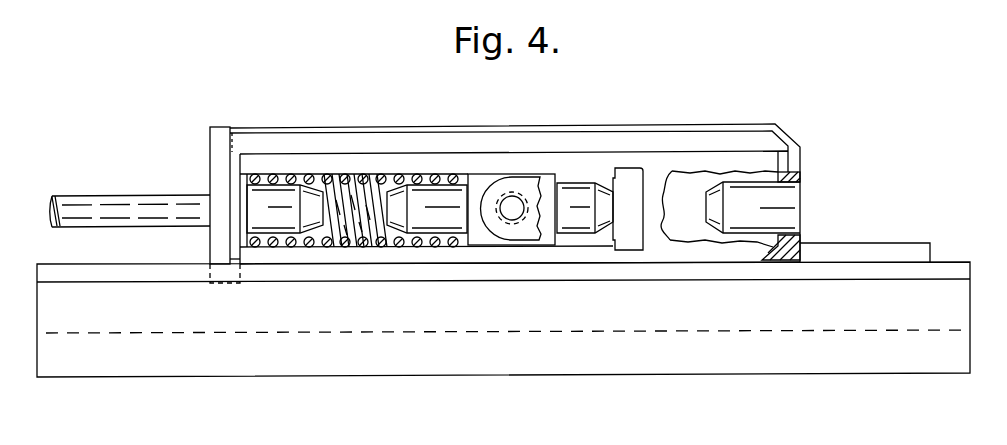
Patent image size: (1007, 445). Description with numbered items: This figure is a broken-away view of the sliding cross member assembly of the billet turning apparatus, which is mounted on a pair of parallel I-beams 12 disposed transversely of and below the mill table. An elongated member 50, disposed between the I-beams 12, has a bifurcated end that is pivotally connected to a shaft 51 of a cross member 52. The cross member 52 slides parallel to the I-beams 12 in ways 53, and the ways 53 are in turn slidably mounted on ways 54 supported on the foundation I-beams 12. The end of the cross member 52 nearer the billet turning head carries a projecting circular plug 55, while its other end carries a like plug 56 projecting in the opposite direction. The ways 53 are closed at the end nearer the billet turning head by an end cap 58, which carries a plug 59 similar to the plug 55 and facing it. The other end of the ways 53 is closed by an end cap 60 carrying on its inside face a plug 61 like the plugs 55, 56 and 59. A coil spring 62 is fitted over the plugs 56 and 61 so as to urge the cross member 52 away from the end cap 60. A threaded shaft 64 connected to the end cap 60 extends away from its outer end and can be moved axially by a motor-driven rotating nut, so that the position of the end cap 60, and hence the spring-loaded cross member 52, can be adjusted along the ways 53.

The I-beams 12 is at (873, 305).
The elongated member 50 is at (527, 232).
The shaft 51 is at (513, 206).
The cross member 52 is at (483, 180).
The ways 53 is at (367, 163).
The ways 54 is at (323, 272).
The circular plug 55 is at (577, 200).
The plug 56 is at (430, 200).
The end cap 58 is at (802, 162).
The plug 59 is at (740, 197).
The end cap 60 is at (213, 152).
The plug 61 is at (288, 195).
The coil spring 62 is at (427, 247).
The threaded shaft 64 is at (125, 210).